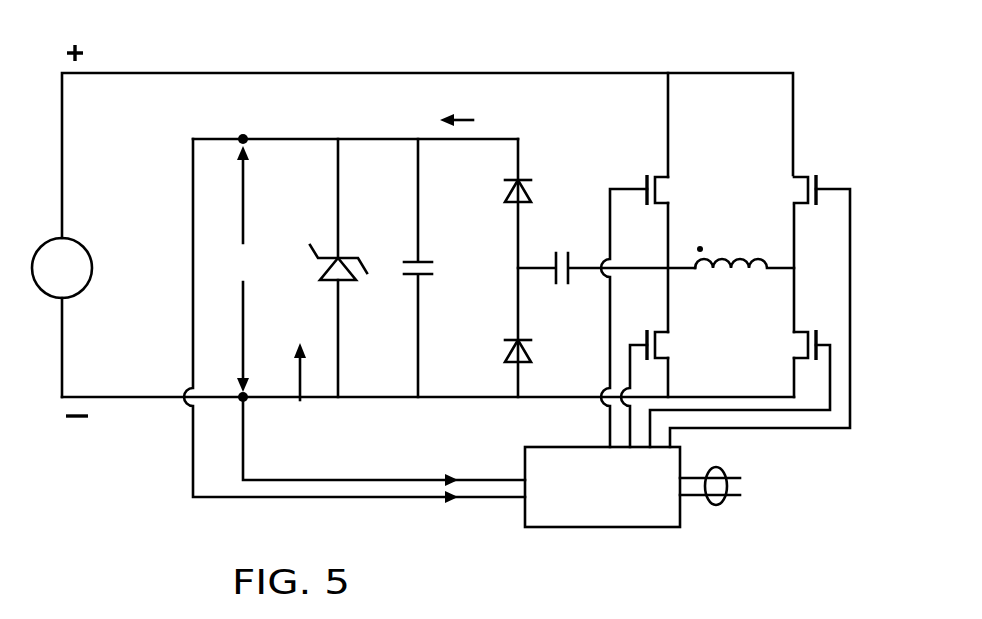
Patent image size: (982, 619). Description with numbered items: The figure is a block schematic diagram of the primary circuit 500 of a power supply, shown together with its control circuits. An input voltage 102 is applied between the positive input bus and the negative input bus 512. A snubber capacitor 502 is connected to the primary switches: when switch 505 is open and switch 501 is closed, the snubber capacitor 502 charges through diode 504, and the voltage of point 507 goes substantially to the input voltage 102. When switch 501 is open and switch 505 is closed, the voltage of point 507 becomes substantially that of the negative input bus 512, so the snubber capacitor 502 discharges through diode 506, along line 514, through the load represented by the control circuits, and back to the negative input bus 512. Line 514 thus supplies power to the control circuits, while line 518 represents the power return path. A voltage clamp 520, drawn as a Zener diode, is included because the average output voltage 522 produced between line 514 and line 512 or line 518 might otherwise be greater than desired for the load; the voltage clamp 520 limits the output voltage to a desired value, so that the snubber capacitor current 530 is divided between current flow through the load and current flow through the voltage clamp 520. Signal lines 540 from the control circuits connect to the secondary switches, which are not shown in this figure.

The primary circuit 500 is at (362, 33).
The voltage 102 is at (93, 263).
The negative input bus 512 is at (97, 396).
The line 514 is at (193, 473).
The line 518 is at (243, 430).
The average output voltage 522 is at (255, 248).
The voltage clamp 520 is at (332, 284).
The diode 506 is at (506, 191).
The diode 504 is at (507, 351).
The snubber capacitor 502 is at (555, 281).
The snubber capacitor current 530 is at (497, 110).
The point 507 is at (739, 258).
The switch 501 is at (676, 190).
The switch 505 is at (674, 346).
The signal lines 540 is at (716, 505).